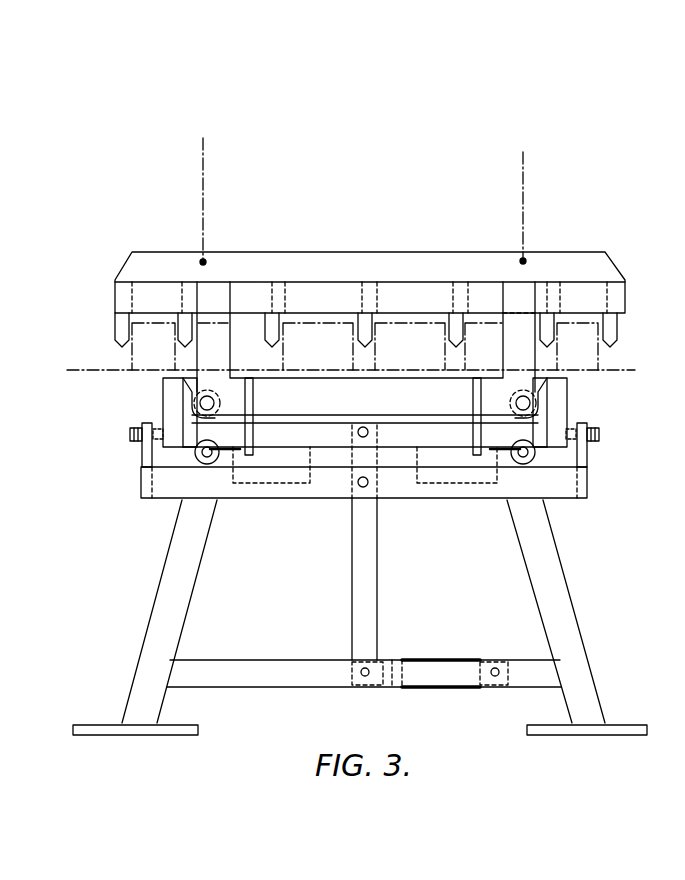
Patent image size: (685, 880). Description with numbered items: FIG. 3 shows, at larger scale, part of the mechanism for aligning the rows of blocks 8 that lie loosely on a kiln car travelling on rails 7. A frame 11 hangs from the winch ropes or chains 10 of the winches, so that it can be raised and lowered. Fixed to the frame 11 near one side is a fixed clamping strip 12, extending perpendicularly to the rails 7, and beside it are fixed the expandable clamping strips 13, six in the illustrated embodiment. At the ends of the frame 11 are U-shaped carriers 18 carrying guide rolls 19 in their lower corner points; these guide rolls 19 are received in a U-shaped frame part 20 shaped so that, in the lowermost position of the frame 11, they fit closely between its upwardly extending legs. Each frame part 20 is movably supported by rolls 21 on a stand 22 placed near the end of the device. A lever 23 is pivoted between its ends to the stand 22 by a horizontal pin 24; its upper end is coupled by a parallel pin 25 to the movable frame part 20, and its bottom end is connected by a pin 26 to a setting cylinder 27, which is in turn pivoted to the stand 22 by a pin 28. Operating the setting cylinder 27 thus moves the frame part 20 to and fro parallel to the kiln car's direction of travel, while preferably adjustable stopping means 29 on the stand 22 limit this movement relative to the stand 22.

The rails 7 is at (92, 372).
The rows of blocks 8 is at (157, 358).
The winch ropes or chains 10 is at (205, 218).
The frame 11 is at (330, 257).
The fixed clamping strip 12 is at (118, 333).
The expandable clamping strips 13 is at (617, 344).
The U-shaped carriers 18 is at (515, 350).
The guide rolls 19 is at (200, 408).
The U-shaped frame part 20 is at (300, 437).
The rolls 21 is at (208, 464).
The stand 22 is at (578, 647).
The lever 23 is at (370, 595).
The pin 24 is at (368, 486).
The pin 25 is at (365, 427).
The pin 26 is at (358, 665).
The setting cylinder 27 is at (448, 658).
The pin 28 is at (497, 667).
The stopping means 29 is at (130, 433).